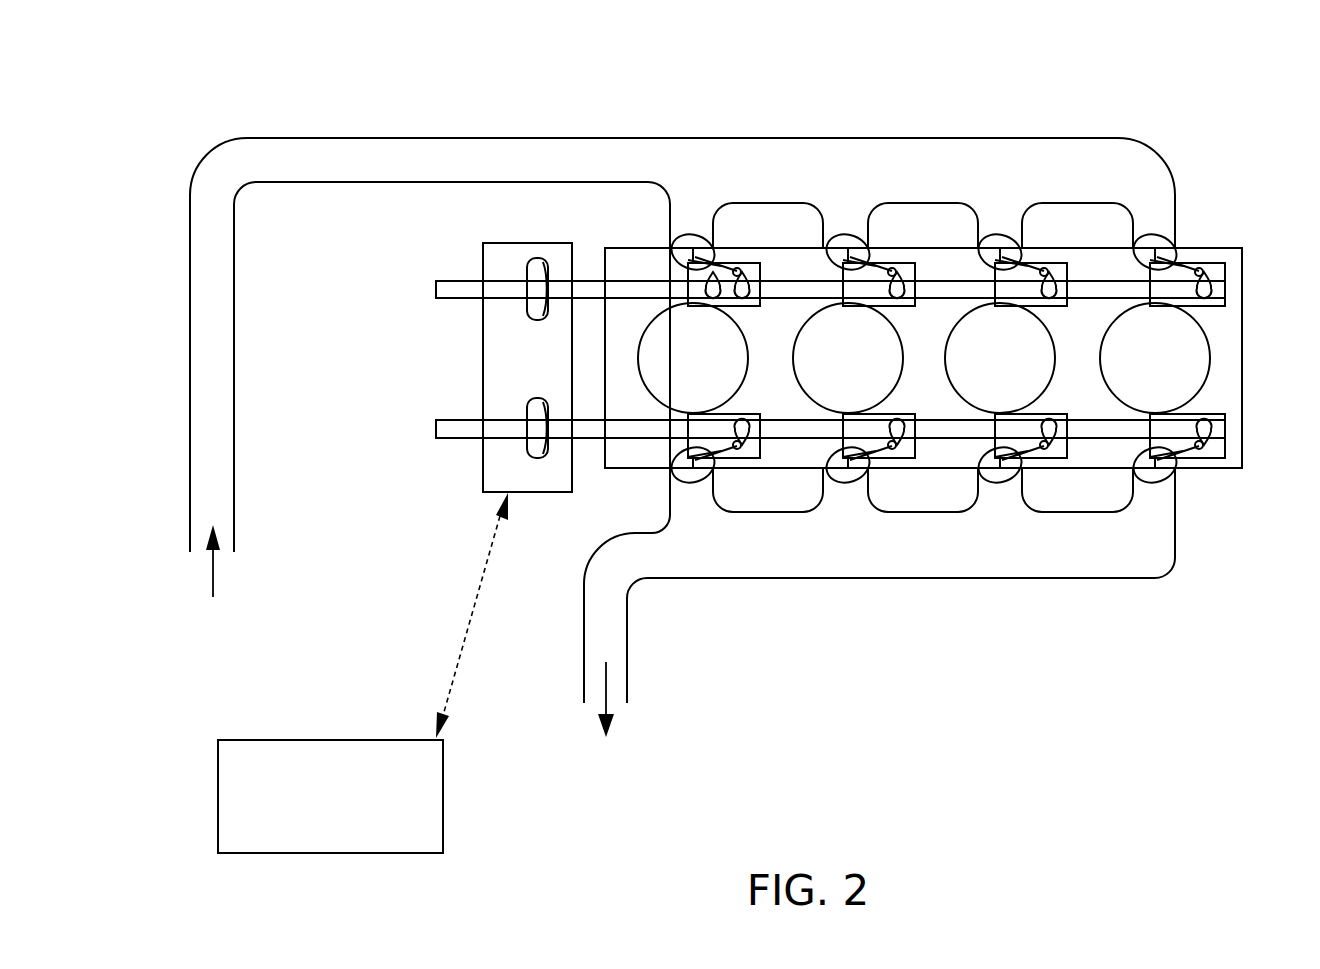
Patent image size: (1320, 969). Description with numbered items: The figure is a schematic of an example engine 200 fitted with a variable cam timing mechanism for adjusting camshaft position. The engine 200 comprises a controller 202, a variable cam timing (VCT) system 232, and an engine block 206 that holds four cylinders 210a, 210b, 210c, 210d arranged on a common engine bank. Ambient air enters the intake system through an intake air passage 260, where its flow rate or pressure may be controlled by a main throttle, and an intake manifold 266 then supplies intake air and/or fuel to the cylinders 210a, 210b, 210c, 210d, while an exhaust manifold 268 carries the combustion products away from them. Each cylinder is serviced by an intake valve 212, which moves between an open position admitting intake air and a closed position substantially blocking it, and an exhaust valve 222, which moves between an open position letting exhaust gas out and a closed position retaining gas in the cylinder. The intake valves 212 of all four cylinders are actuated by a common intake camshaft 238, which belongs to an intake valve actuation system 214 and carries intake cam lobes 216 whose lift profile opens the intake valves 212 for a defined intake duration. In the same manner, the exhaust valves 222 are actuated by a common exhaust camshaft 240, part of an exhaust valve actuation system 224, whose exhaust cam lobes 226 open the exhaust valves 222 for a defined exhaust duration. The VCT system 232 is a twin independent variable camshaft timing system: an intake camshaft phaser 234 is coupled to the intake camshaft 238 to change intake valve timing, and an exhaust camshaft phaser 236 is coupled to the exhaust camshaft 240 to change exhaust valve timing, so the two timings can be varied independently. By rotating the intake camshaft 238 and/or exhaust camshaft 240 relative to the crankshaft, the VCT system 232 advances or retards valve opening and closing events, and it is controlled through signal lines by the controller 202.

The engine 200 is at (238, 40).
The controller 202 is at (363, 673).
The engine block 206 is at (1258, 252).
The cylinder 210a is at (693, 358).
The cylinder 210b is at (848, 358).
The cylinder 210c is at (1000, 358).
The cylinder 210d is at (1155, 358).
The intake valve 212 is at (842, 237).
The intake valve actuation system 214 is at (904, 299).
The intake cam lobe 216 is at (899, 276).
The exhaust valve 222 is at (838, 481).
The exhaust valve actuation system 224 is at (900, 420).
The exhaust cam lobe 226 is at (898, 446).
The variable cam timing system 232 is at (482, 478).
The intake camshaft phaser 234 is at (535, 258).
The exhaust camshaft phaser 236 is at (537, 460).
The intake camshaft 238 is at (620, 276).
The exhaust camshaft 240 is at (642, 438).
The intake air passage 260 is at (235, 278).
The intake manifold 266 is at (923, 204).
The exhaust manifold 268 is at (859, 635).